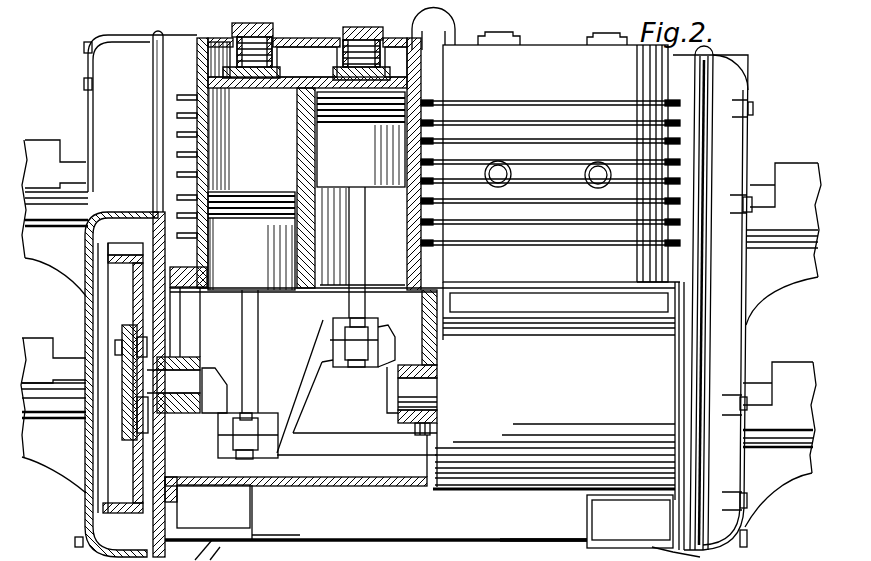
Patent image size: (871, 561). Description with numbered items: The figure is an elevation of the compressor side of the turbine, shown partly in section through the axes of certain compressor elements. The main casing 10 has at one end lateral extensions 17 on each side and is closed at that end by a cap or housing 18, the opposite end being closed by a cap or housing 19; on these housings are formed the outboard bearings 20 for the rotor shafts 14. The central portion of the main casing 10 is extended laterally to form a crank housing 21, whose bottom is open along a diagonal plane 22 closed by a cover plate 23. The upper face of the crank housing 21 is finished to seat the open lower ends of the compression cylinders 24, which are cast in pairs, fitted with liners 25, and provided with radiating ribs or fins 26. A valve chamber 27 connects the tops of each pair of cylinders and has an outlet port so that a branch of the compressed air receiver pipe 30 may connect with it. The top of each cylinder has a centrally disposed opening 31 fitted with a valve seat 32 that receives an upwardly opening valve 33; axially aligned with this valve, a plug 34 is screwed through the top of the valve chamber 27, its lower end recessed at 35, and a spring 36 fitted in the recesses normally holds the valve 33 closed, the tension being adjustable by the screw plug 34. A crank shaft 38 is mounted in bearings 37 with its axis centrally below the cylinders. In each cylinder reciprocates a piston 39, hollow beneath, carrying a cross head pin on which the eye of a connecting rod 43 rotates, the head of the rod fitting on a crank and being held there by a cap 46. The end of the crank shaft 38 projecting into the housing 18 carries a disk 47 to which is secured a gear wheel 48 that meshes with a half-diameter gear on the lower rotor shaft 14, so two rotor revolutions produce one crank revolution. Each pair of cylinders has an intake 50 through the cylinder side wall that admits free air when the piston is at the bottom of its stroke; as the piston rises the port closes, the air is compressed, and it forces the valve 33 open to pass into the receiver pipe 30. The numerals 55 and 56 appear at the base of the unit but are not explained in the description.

The main casing 10 is at (376, 518).
The rotor shaft 14 is at (75, 173).
The lateral extensions 17 is at (157, 525).
The cap or housing 18 is at (85, 435).
The cap or housing 19 is at (733, 92).
The outboard bearings 20 is at (40, 143).
The crank housing 21 is at (660, 303).
The diagonal plane 22 is at (620, 323).
The cover plate 23 is at (577, 460).
The compression cylinders 24 is at (215, 142).
The liners 25 is at (207, 175).
The radiating ribs or fins 26 is at (177, 97).
The valve chamber 27 is at (318, 34).
The compressed air receiver pipe 30 is at (445, 22).
The centrally disposed opening 31 is at (307, 63).
The valve seat 32 is at (268, 88).
The valve 33 is at (208, 70).
The plug 34 is at (280, 23).
The recess 35 is at (232, 37).
The spring 36 is at (197, 37).
The bearings 37 is at (180, 370).
The crank shaft 38 is at (290, 403).
The piston 39 is at (306, 191).
The connecting rod 43 is at (355, 302).
The cap 46 is at (373, 354).
The disk 47 is at (143, 345).
The gear wheel 48 is at (132, 460).
The intake 50 is at (509, 181).
The base rail 55 is at (522, 550).
The base rail 56 is at (566, 550).